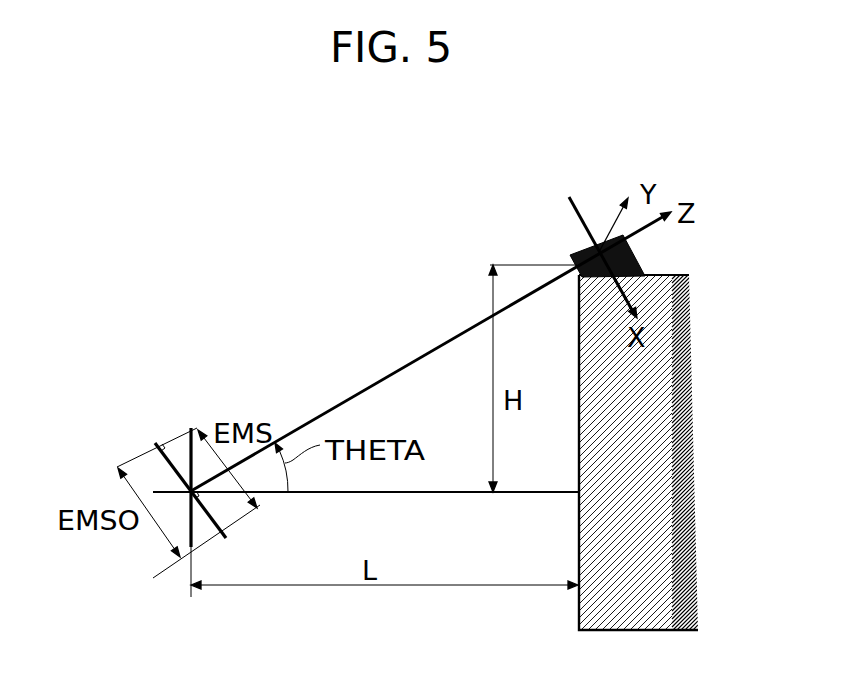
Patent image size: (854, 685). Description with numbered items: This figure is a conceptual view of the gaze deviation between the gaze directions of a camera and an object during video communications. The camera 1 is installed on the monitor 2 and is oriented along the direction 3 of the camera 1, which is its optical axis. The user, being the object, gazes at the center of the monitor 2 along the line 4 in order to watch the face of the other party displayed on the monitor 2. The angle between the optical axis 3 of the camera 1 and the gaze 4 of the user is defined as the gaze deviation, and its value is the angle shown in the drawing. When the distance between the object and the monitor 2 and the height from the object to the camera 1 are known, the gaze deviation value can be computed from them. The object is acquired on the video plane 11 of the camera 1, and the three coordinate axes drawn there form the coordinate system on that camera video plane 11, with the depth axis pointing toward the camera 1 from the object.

The camera 1 is at (573, 257).
The monitor 2 is at (615, 410).
The direction of the camera 3 is at (413, 353).
The gaze direction of the user 4 is at (432, 495).
The video plane of the camera 11 is at (573, 197).